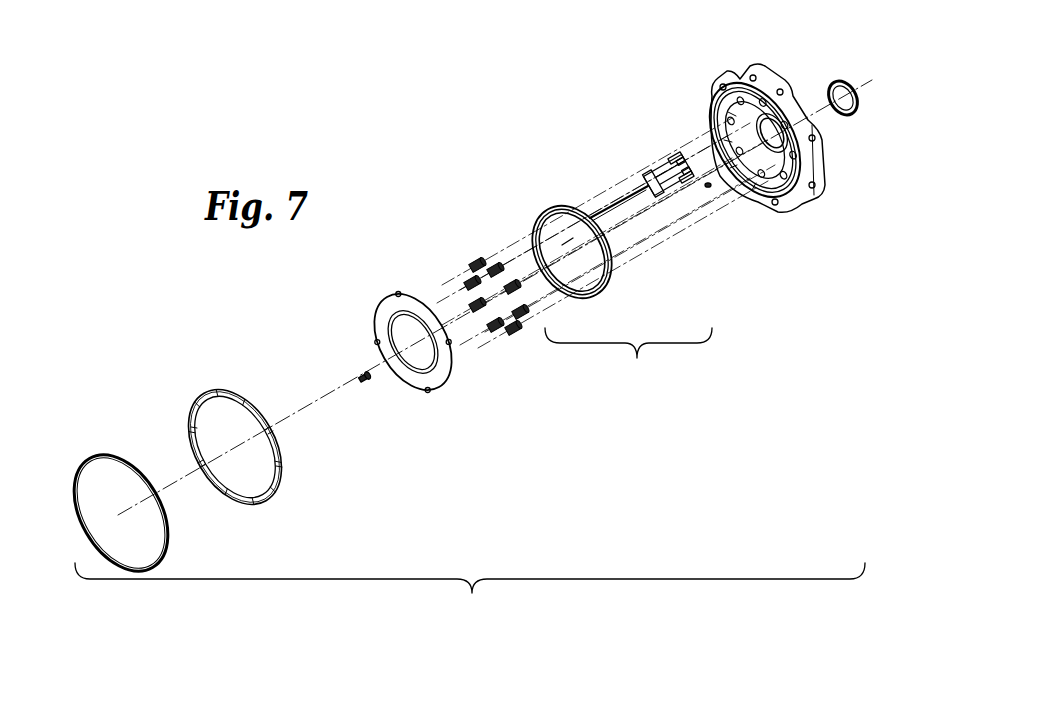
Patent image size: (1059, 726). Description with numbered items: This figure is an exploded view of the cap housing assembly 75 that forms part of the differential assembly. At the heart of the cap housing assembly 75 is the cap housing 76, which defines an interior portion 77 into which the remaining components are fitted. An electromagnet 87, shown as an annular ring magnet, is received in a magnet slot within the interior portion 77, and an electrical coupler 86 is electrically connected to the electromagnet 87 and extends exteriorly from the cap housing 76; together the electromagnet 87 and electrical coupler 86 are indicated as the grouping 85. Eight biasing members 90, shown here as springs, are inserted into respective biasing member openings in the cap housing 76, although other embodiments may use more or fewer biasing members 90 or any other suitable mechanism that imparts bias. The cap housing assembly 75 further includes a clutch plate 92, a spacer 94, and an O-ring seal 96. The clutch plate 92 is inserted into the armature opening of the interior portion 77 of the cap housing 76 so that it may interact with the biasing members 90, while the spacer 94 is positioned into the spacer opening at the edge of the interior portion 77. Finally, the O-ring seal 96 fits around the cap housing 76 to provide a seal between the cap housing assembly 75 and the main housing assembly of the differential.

The cap housing assembly 75 is at (463, 325).
The cap housing 76 is at (772, 84).
The interior portion 77 is at (712, 108).
The sensor assembly 85 is at (614, 246).
The electrical coupler 86 is at (652, 168).
The electromagnet 87 is at (560, 208).
The biasing member 90 is at (519, 334).
The clutch plate 92 is at (432, 383).
The spacer 94 is at (280, 469).
The O-ring seal 96 is at (130, 462).